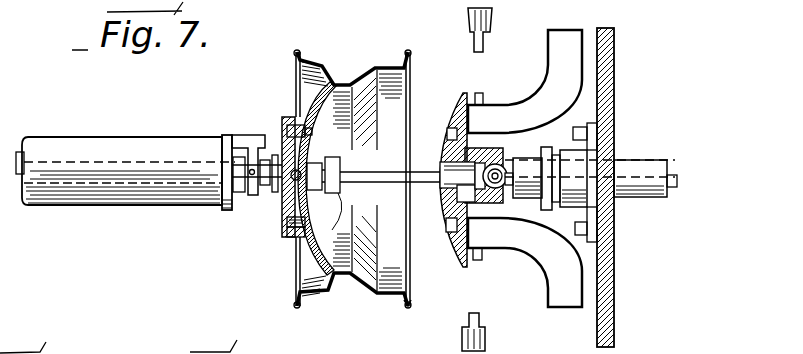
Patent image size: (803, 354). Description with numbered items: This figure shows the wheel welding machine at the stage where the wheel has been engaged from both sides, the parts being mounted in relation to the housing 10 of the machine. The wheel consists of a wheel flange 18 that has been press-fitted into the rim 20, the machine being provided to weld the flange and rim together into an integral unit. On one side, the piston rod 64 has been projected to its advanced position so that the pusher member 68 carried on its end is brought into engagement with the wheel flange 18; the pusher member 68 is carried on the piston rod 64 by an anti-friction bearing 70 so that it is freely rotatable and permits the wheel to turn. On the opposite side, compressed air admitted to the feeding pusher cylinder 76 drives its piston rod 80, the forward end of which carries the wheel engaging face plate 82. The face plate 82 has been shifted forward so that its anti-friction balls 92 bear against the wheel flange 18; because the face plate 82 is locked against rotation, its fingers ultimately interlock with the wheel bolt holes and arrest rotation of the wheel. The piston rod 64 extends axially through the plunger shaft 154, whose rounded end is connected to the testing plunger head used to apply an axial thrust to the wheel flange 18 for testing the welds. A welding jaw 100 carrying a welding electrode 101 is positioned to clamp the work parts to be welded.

The housing 10 is at (614, 95).
The wheel flange 18 is at (313, 95).
The rim 20 is at (391, 302).
The piston rod 64 is at (427, 170).
The pusher member 68 is at (288, 222).
The anti-friction bearing 70 is at (335, 197).
The feeding pusher cylinder 76 is at (131, 207).
The piston rod 80 is at (110, 165).
The face plate 82 is at (283, 130).
The anti-friction balls 92 is at (248, 140).
The welding jaw 100 is at (468, 28).
The welding electrode 101 is at (482, 96).
The plunger shaft 154 is at (640, 195).